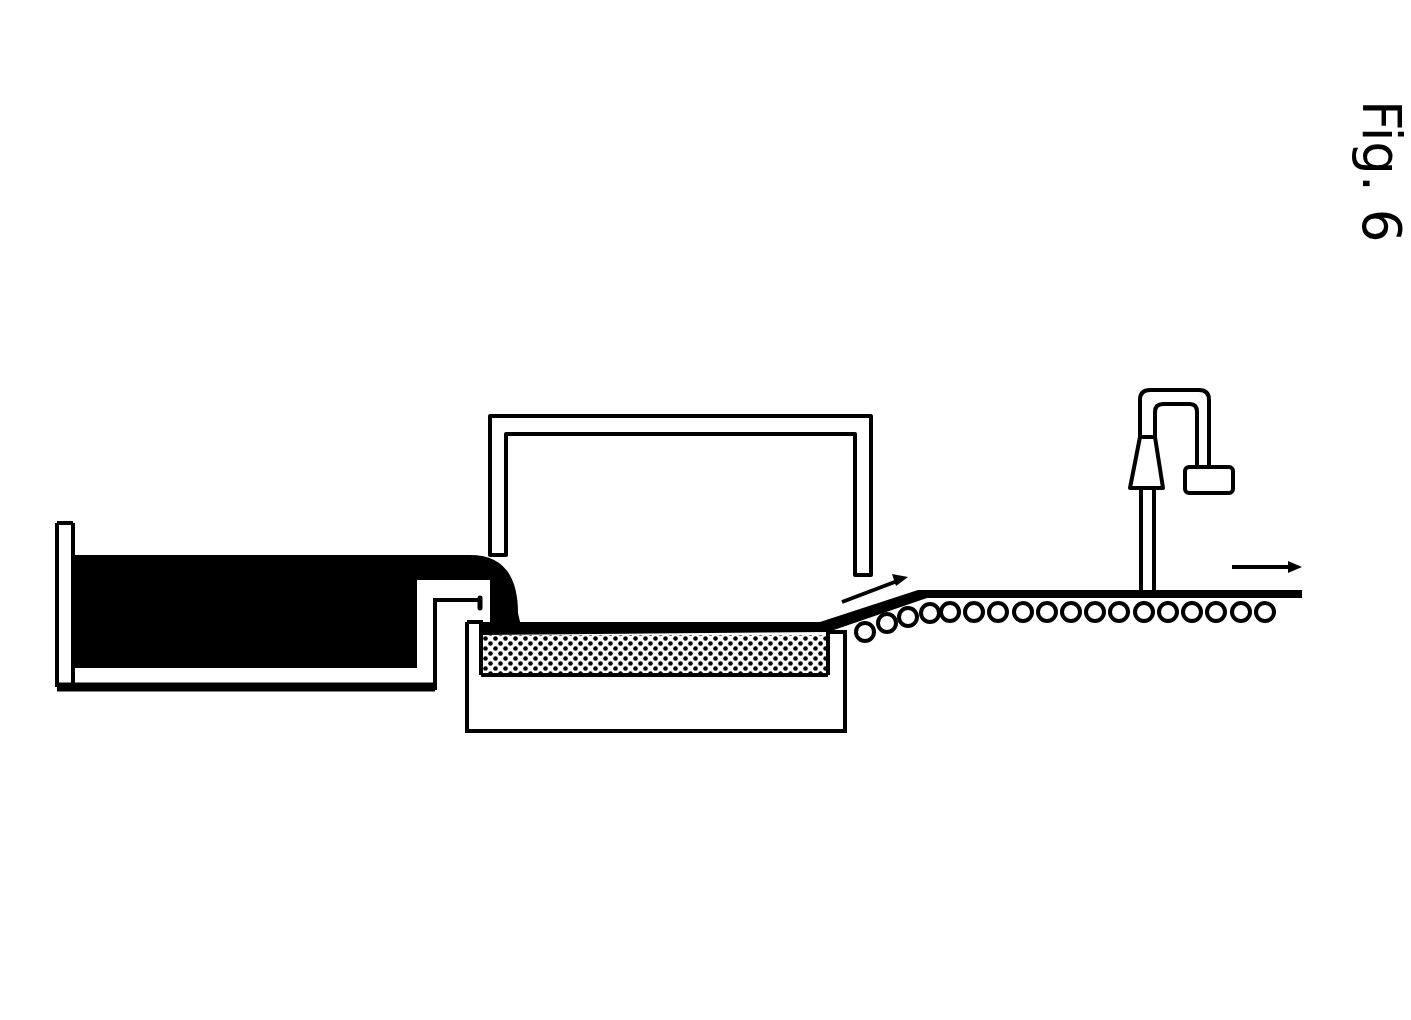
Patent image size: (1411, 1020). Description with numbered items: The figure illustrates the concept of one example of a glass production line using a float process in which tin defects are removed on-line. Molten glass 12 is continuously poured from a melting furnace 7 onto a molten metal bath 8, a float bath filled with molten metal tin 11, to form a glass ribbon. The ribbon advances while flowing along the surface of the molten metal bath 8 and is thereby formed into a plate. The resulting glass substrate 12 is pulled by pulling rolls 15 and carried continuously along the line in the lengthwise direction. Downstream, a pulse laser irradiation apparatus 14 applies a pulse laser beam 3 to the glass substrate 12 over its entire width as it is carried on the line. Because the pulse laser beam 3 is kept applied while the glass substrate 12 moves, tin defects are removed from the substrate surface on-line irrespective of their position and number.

The melting furnace 7 is at (70, 515).
The molten glass 12 is at (247, 553).
The molten metal bath 8 is at (548, 713).
The molten metal tin 11 is at (653, 668).
The pulling rolls 15 is at (915, 633).
The pulse laser irradiation apparatus 14 is at (1140, 418).
The pulse laser beam 3 is at (1157, 523).